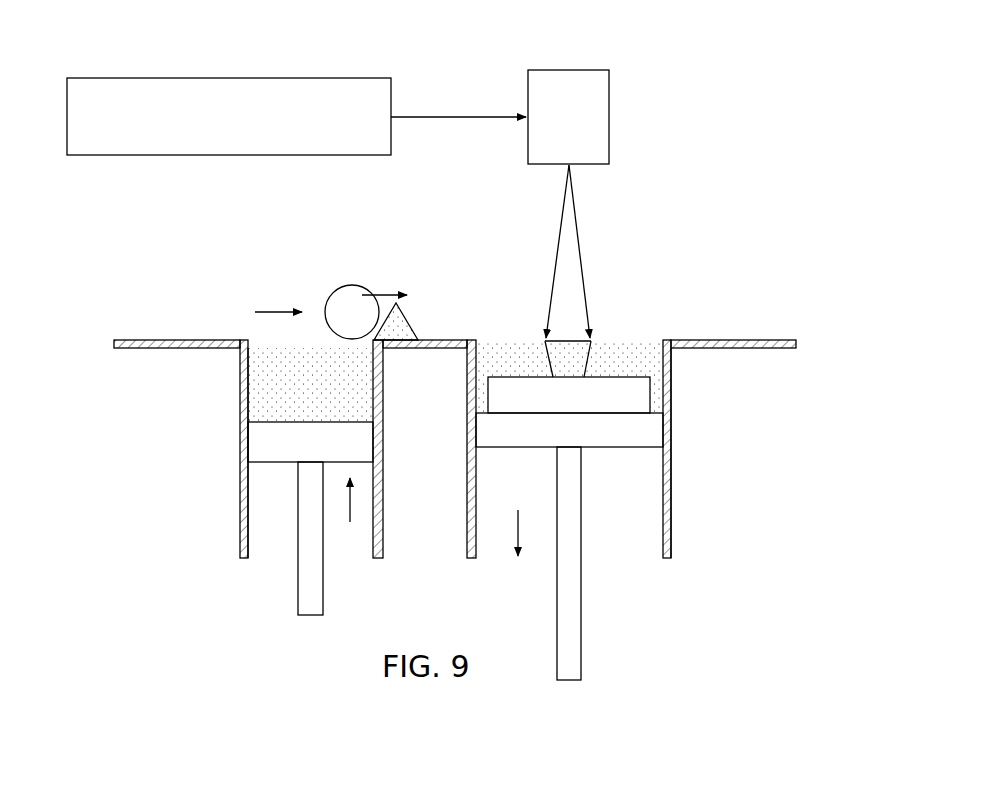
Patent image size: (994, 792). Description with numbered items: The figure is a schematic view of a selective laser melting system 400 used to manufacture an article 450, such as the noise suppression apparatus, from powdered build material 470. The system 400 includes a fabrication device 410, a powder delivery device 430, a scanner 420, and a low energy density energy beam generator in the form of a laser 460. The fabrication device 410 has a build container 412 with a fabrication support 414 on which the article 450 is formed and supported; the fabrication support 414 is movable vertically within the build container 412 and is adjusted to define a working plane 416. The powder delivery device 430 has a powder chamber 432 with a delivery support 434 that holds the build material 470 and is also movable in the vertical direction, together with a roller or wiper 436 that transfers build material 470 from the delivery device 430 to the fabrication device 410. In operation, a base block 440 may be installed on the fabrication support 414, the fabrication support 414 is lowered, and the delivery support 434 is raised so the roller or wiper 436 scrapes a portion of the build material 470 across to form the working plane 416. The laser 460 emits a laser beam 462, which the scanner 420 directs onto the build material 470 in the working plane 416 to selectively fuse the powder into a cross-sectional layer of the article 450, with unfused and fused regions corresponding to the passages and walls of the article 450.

The SLM system 400 is at (716, 84).
The fabrication device 410 is at (700, 455).
The build container 412 is at (673, 362).
The fabrication support 414 is at (622, 449).
The working plane 416 is at (645, 343).
The scanner 420 is at (570, 70).
The powder delivery device 430 is at (172, 432).
The powder chamber 432 is at (245, 393).
The delivery support 434 is at (258, 451).
The roller or wiper 436 is at (352, 285).
The base block 440 is at (527, 400).
The article 450 is at (538, 340).
The laser 460 is at (236, 77).
The laser beam 462 is at (460, 114).
The build material 470 is at (258, 375).